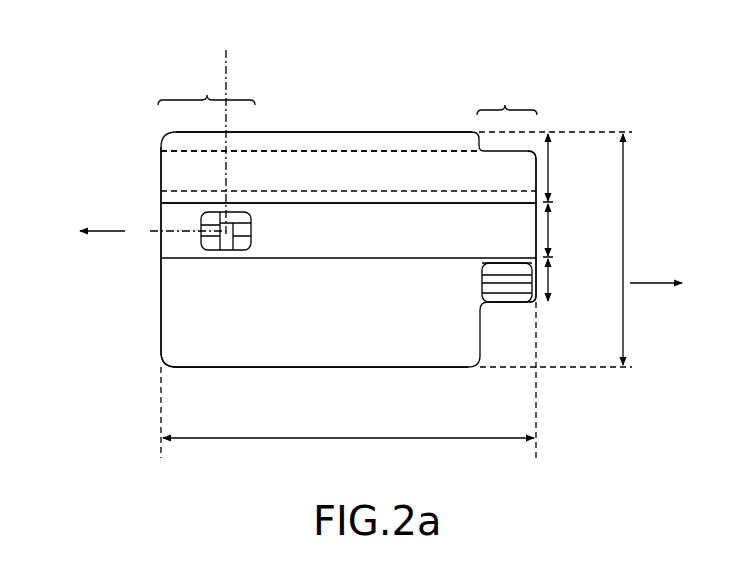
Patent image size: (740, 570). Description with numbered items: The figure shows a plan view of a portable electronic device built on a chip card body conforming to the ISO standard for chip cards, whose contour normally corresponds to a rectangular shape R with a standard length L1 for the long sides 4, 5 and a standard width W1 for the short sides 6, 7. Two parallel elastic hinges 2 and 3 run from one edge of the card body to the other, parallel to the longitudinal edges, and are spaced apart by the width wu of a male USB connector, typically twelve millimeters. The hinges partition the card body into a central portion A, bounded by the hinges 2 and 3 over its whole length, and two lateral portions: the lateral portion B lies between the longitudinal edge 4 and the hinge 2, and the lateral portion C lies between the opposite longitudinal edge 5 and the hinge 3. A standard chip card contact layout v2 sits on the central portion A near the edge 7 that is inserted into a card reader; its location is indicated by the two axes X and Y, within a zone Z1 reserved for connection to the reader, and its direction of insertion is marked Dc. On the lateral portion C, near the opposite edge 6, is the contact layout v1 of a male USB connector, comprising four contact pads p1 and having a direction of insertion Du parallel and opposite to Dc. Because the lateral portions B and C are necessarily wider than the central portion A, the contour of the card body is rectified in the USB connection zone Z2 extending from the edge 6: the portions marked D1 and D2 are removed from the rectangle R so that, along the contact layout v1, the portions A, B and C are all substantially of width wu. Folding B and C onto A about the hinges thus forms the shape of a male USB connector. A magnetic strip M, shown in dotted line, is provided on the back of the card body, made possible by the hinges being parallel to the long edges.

The elastic hinge 2 is at (335, 203).
The elastic hinge 3 is at (338, 258).
The longitudinal edge 4 is at (388, 132).
The longitudinal edge 5 is at (207, 368).
The edge 6 is at (537, 218).
The edge 7 is at (160, 282).
The central portion A is at (458, 222).
The lateral portion B is at (295, 143).
The lateral portion C is at (160, 340).
The magnetic strip M is at (176, 148).
The rectangular shape R is at (348, 275).
The contact layout of male USB connector v1 is at (482, 283).
The contact layout conforming to ISO 7816 v2 is at (251, 221).
The contact pads p1 is at (500, 266).
The removed portion D1 is at (527, 141).
The removed portion D2 is at (527, 333).
The axis X is at (225, 130).
The axis Y is at (178, 232).
The direction of insertion Dc is at (82, 232).
The direction of insertion Du is at (656, 267).
The zone reserved for connection to a card reader Z1 is at (206, 88).
The USB connection zone Z2 is at (507, 97).
The standard dimension of the short sides W1 is at (647, 249).
The standard dimension of the long sides L1 is at (347, 412).
The width of a male USB connector wu is at (561, 217).